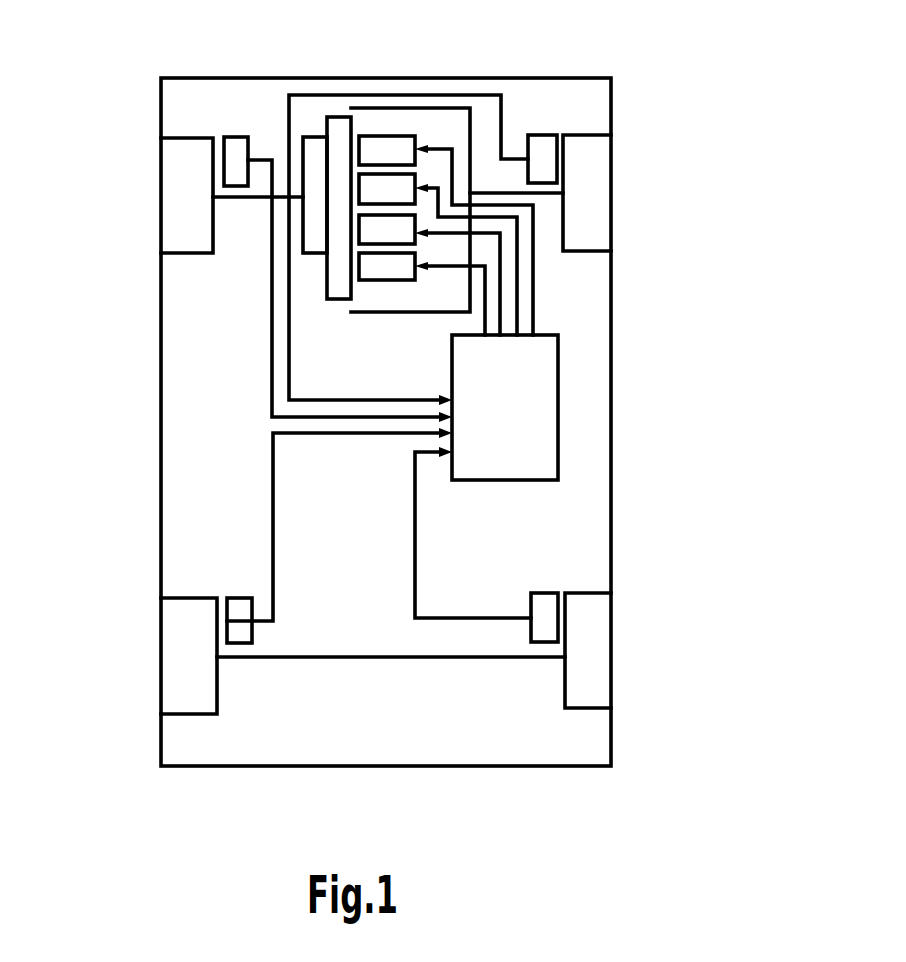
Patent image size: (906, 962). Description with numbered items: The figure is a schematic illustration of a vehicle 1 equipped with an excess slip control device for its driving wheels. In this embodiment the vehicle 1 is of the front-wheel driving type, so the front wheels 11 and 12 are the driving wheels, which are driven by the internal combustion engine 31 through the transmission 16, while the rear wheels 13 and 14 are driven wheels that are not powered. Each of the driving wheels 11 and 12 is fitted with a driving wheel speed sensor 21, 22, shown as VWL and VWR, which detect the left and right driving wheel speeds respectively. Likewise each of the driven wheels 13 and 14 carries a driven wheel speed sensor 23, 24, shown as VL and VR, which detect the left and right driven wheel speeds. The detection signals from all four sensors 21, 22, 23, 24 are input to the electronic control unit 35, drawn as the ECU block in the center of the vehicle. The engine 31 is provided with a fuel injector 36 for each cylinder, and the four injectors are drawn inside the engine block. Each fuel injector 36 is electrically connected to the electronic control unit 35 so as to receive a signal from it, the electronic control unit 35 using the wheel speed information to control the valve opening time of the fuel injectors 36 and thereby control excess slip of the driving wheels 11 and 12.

The vehicle 1 is at (572, 78).
The front wheel 11 is at (168, 208).
The front wheel 12 is at (598, 185).
The rear wheel 13 is at (172, 682).
The rear wheel 14 is at (607, 647).
The transmission 16 is at (331, 128).
The driving wheel speed sensor 21 is at (223, 158).
The driving wheel speed sensor 22 is at (545, 150).
The driven wheel speed sensor 23 is at (227, 630).
The driven wheel speed sensor 24 is at (553, 607).
The internal combustion engine 31 is at (463, 110).
The electronic control unit 35 is at (557, 376).
The fuel injector 36 is at (395, 265).